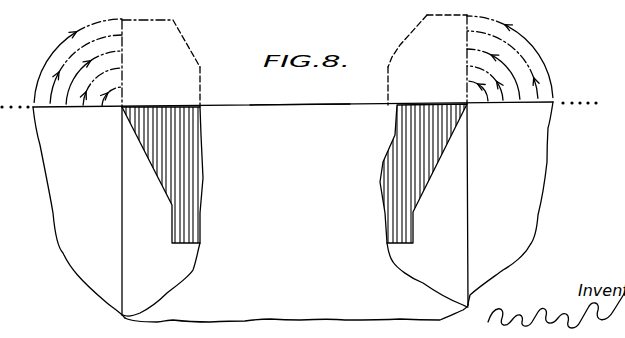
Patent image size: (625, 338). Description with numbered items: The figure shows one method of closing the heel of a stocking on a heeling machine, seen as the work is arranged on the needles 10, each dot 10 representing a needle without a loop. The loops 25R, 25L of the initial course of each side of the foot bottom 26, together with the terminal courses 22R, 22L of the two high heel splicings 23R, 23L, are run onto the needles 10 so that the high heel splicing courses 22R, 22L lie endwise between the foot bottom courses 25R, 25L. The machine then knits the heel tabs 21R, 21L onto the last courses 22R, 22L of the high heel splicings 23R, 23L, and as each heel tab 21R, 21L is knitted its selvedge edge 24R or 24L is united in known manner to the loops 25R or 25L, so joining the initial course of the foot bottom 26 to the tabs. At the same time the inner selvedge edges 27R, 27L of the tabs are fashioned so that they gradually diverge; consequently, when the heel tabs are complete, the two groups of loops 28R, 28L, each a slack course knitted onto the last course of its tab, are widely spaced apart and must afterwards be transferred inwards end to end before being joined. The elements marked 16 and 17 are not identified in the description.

The needle 10 is at (7, 112).
The upper portion 16 is at (138, 7).
The sole center portion 17 is at (300, 52).
The heel tab 21L is at (158, 62).
The heel tab 21R is at (429, 52).
The last course of high heel splicing 22L is at (140, 106).
The last course of high heel splicing 22R is at (408, 104).
The high heel splicing 23L is at (180, 155).
The high heel splicing 23R is at (408, 153).
The selvedge edge of heel tab 24L is at (118, 53).
The selvedge edge of heel tab 24R is at (500, 28).
The loops of initial course of foot bottom 25L is at (75, 108).
The loops of initial course of foot bottom 25R is at (515, 103).
The foot bottom 26 is at (63, 230).
The inner selvedge edge of heel tab 27L is at (182, 35).
The inner selvedge edge of heel tab 27R is at (422, 23).
The group of loops 28L is at (167, 21).
The group of loops 28R is at (437, 14).